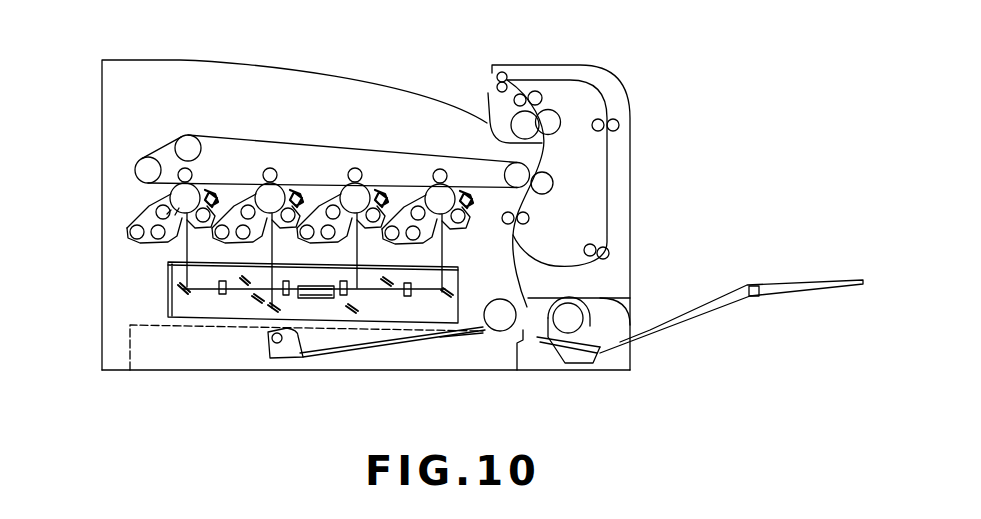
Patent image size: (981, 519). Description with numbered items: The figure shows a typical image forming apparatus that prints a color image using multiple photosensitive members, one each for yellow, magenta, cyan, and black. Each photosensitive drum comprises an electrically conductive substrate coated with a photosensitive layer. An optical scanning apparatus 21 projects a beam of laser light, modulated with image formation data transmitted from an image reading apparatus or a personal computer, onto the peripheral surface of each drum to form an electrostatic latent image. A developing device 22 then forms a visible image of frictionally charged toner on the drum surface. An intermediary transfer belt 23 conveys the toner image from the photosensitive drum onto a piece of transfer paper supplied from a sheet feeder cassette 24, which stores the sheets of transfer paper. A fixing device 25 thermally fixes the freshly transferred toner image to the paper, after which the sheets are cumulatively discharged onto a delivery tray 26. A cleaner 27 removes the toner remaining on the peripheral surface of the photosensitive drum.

The optical scanning apparatus 21 is at (168, 300).
The developing device 22 is at (412, 213).
The intermediary transfer belt 23 is at (218, 137).
The sheet feeder cassette 24 is at (220, 350).
The fixing device 25 is at (560, 120).
The delivery tray 26 is at (438, 103).
The cleaner 27 is at (463, 207).